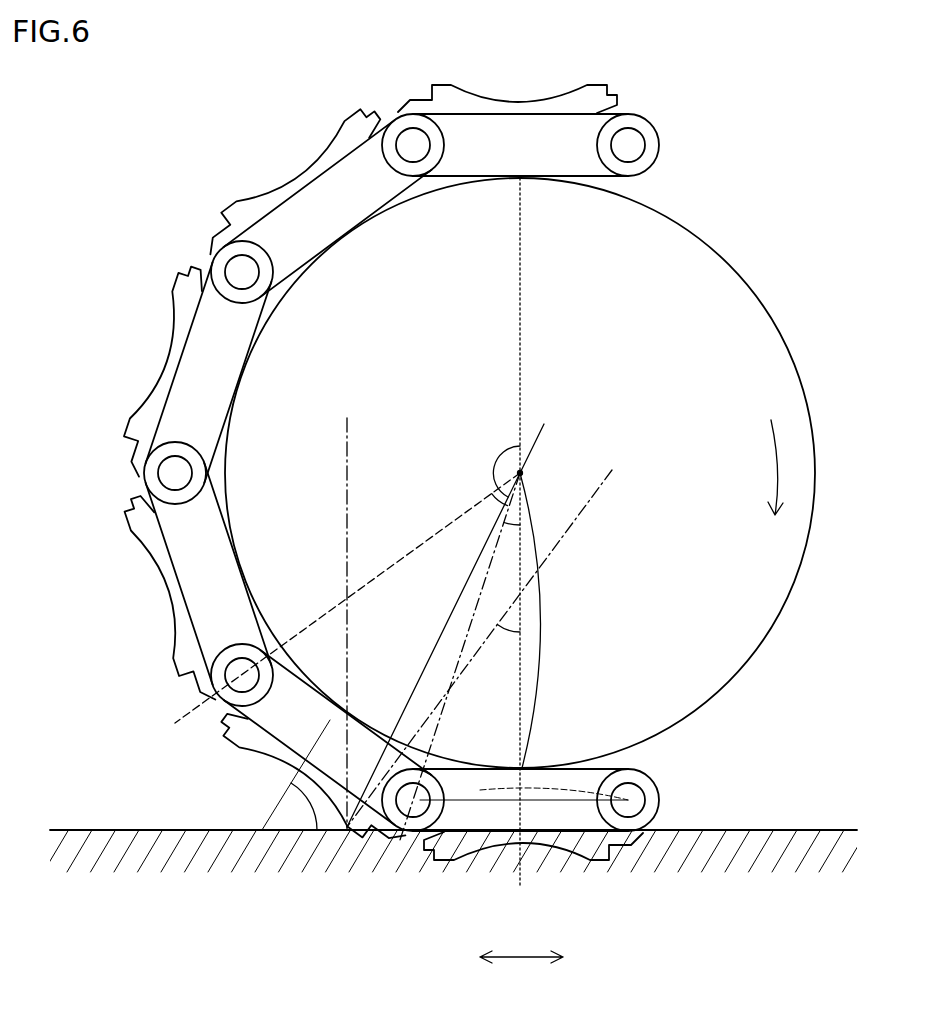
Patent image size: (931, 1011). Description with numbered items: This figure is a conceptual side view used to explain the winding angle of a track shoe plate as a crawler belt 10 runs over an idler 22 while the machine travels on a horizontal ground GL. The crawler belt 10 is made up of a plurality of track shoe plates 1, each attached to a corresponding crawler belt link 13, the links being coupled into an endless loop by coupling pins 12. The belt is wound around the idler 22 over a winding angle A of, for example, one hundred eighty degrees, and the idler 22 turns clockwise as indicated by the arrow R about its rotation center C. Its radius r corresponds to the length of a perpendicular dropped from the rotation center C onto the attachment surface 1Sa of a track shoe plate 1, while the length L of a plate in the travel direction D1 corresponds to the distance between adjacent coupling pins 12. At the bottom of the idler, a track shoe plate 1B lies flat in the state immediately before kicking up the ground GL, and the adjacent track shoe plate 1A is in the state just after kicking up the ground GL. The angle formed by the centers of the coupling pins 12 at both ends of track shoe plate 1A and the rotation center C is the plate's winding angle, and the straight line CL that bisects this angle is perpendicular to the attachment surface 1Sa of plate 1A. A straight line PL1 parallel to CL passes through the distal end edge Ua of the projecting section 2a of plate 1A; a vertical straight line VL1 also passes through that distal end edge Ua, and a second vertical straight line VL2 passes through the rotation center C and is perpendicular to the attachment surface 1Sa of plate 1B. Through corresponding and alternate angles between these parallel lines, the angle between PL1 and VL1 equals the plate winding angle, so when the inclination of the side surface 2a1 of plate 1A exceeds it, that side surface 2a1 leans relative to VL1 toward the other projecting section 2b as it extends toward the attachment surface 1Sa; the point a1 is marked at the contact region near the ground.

The track shoe plate 1 is at (447, 93).
The crawler belt 10 is at (248, 154).
The coupling pin 12 is at (408, 142).
The crawler belt link 13 is at (417, 122).
The idler 22 is at (690, 262).
The projecting section 2a is at (362, 840).
The side surface 2a1 is at (345, 835).
The projecting section 2b is at (228, 735).
The attachment surface 1Sa is at (272, 745).
The distal end edge Ua is at (355, 840).
The contact point a1 is at (330, 835).
The ground GL is at (808, 830).
The straight line VL1 is at (347, 610).
The straight line VL2 is at (518, 384).
The straight line CL is at (461, 614).
The straight line PL1 is at (489, 635).
The rotation center C is at (525, 473).
The winding angle A is at (495, 463).
The radius r is at (540, 620).
The arrow R is at (784, 467).
The length L is at (590, 797).
The travel direction D1 is at (521, 970).
The track shoe plate 1A is at (385, 928).
The track shoe plate 1B is at (598, 928).